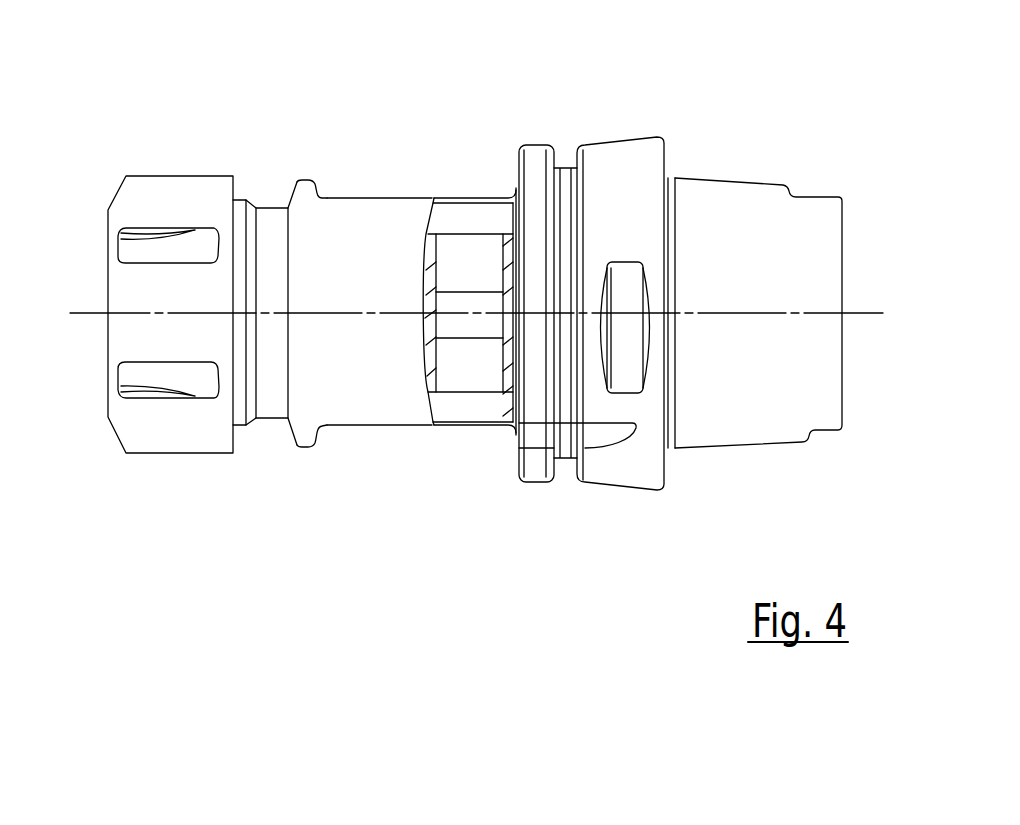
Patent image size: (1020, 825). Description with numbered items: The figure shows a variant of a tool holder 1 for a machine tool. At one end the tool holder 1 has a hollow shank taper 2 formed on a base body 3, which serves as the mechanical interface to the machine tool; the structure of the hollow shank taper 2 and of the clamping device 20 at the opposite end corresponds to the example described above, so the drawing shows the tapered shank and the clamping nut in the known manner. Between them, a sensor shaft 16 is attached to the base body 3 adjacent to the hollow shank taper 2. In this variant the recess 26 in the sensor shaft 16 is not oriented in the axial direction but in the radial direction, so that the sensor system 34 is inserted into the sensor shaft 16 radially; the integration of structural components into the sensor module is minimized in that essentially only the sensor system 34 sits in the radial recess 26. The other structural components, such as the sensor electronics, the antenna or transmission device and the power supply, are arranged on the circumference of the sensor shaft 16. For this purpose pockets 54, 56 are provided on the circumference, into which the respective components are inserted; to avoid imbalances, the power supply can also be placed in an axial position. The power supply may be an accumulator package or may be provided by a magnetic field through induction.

The tool holder 1 is at (372, 147).
The hollow shank taper 2 is at (718, 160).
The base body 3 is at (463, 432).
The sensor shaft 16 is at (343, 400).
The clamping device 20 is at (157, 163).
The recess 26 is at (455, 250).
The sensor system 34 is at (450, 323).
The pocket 54 is at (322, 178).
The pocket 56 is at (322, 443).